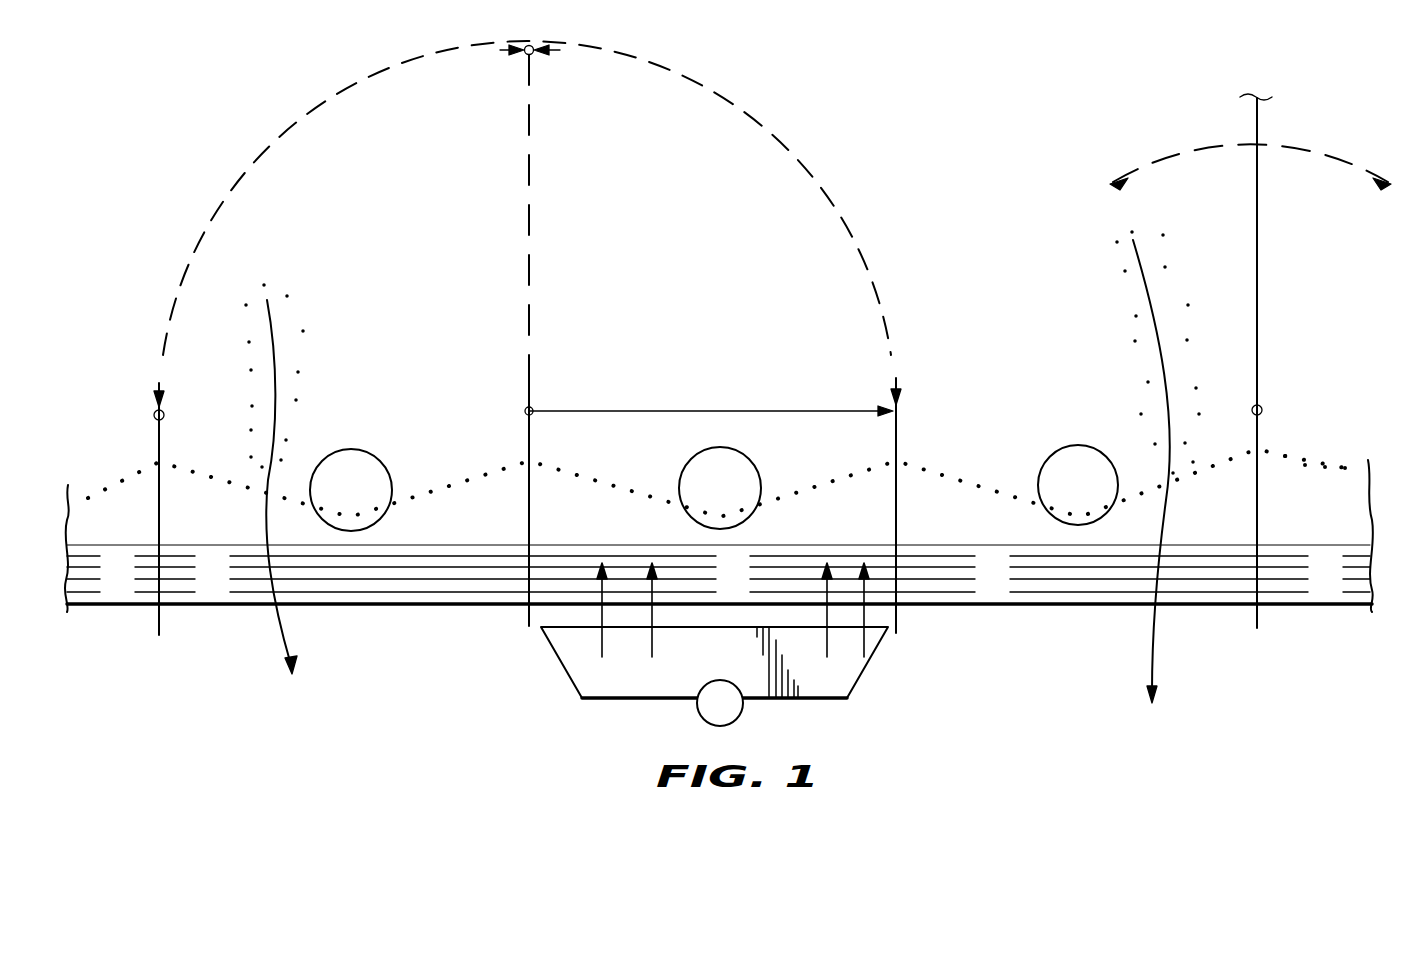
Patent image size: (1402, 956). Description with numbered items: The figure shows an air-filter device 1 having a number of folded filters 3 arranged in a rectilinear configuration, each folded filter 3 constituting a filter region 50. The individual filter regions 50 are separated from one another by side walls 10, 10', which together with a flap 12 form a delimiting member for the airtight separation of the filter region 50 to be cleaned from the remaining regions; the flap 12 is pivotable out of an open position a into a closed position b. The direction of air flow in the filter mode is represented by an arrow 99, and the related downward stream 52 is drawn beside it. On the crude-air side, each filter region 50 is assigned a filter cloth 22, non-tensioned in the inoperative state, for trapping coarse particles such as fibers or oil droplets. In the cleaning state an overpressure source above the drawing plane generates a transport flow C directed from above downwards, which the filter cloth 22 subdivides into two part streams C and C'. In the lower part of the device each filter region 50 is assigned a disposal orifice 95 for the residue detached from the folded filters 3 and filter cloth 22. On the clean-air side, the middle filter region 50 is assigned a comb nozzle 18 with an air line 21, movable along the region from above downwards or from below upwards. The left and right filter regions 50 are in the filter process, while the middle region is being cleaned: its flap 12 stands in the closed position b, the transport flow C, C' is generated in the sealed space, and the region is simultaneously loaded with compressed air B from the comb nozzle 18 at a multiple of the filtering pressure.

The air-filter device 1 is at (929, 672).
The folded filter 3 is at (323, 607).
The side wall 10 is at (937, 505).
The side wall 10' is at (497, 493).
The flap 12 is at (792, 410).
The comb nozzle 18 is at (542, 692).
The air line 21 is at (697, 708).
The filter cloth 22 is at (1304, 460).
The filter region 50 is at (131, 589).
The downward air stream arrow 52 is at (272, 686).
The disposal orifice 95 is at (354, 452).
The arrow 99 is at (271, 323).
The open position a is at (531, 197).
The closed position b is at (718, 410).
The compressed air B is at (653, 641).
The transport flow C is at (770, 487).
The part stream of transport flow C' is at (673, 428).